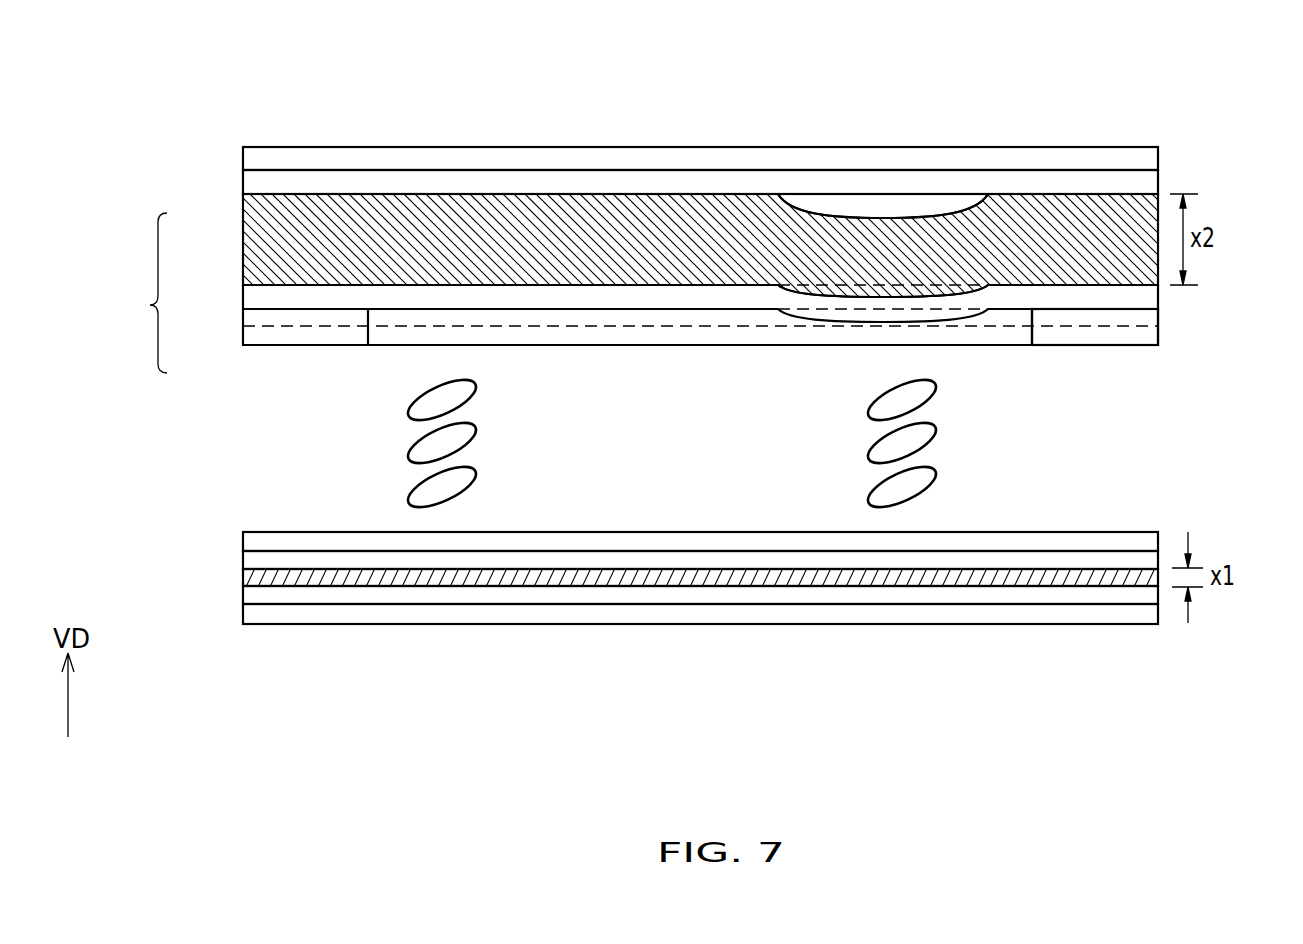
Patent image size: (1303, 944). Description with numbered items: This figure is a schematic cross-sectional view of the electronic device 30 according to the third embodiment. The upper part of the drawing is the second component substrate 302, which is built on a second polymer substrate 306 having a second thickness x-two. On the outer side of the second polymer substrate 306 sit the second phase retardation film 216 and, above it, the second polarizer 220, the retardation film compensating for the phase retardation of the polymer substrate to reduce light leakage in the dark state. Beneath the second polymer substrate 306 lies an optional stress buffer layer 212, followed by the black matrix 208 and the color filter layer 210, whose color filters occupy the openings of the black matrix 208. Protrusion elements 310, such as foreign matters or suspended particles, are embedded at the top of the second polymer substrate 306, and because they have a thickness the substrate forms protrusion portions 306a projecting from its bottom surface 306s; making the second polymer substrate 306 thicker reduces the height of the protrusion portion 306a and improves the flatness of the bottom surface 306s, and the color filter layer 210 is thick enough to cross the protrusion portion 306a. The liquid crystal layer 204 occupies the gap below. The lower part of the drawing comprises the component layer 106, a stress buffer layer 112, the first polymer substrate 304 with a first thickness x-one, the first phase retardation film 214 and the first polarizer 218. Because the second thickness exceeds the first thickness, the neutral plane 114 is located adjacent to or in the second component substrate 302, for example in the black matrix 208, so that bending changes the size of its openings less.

The electronic device 30 is at (1195, 118).
The second polarizer 220 is at (258, 153).
The second phase retardation film 216 is at (258, 181).
The second polymer substrate 306 is at (258, 228).
The bottom surface 306s is at (636, 283).
The protrusion portion 306a is at (922, 283).
The protrusion element 310 is at (848, 199).
The stress buffer layer 212 is at (258, 293).
The black matrix 208 is at (258, 318).
The color filter layer 210 is at (422, 333).
The second component substrate 302 is at (135, 293).
The neutral plane 114 is at (1113, 327).
The liquid crystal layer 204 is at (1078, 436).
The component layer 106 is at (262, 541).
The stress buffer layer 112 is at (262, 561).
The first polymer substrate 304 is at (262, 578).
The first phase retardation film 214 is at (262, 595).
The first polarizer 218 is at (262, 614).